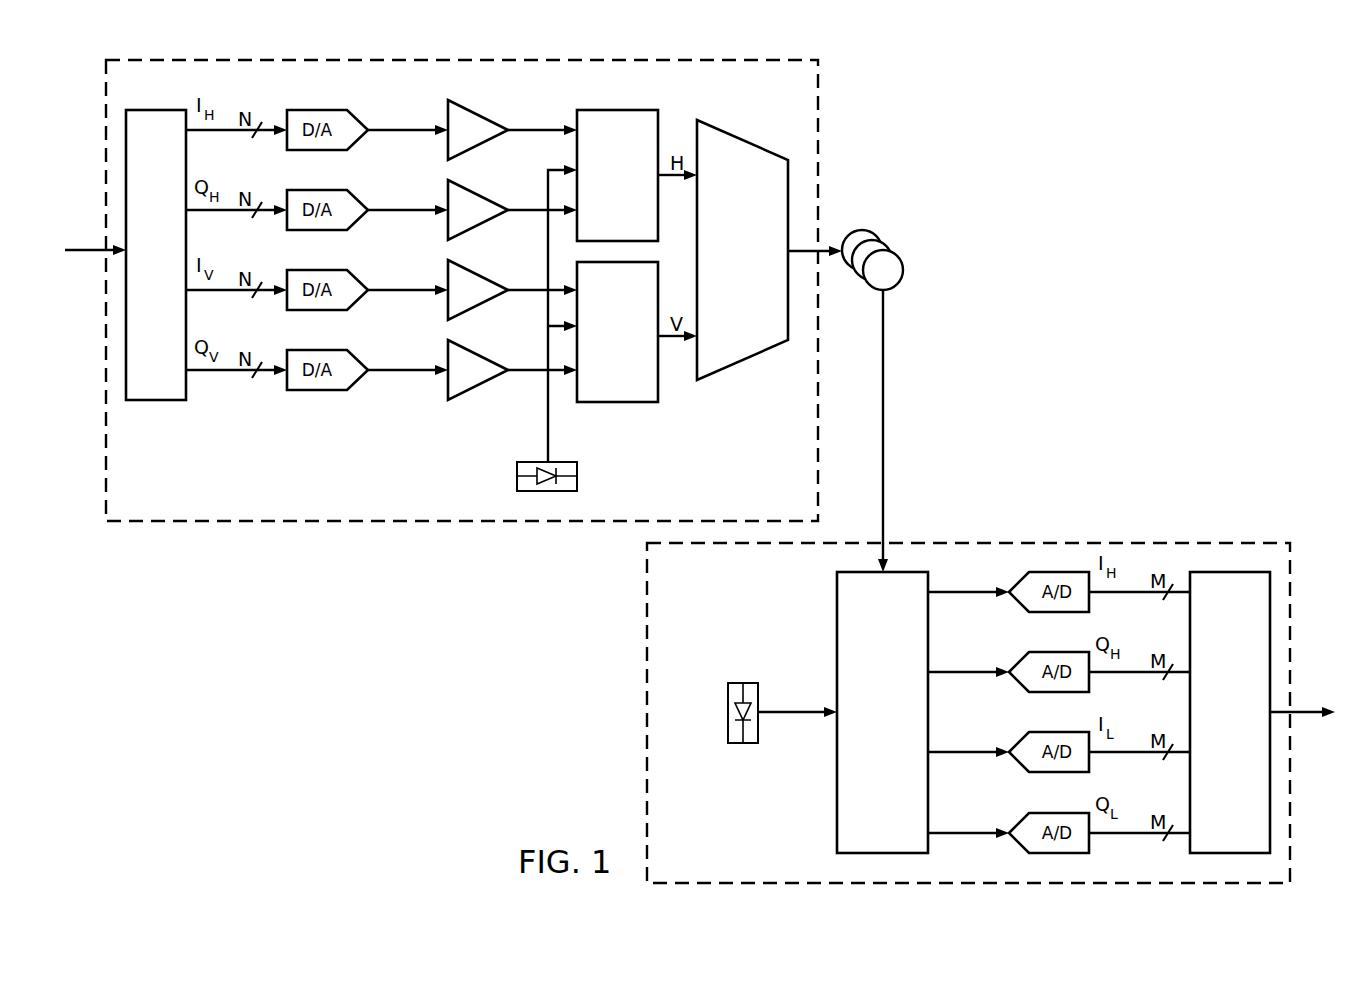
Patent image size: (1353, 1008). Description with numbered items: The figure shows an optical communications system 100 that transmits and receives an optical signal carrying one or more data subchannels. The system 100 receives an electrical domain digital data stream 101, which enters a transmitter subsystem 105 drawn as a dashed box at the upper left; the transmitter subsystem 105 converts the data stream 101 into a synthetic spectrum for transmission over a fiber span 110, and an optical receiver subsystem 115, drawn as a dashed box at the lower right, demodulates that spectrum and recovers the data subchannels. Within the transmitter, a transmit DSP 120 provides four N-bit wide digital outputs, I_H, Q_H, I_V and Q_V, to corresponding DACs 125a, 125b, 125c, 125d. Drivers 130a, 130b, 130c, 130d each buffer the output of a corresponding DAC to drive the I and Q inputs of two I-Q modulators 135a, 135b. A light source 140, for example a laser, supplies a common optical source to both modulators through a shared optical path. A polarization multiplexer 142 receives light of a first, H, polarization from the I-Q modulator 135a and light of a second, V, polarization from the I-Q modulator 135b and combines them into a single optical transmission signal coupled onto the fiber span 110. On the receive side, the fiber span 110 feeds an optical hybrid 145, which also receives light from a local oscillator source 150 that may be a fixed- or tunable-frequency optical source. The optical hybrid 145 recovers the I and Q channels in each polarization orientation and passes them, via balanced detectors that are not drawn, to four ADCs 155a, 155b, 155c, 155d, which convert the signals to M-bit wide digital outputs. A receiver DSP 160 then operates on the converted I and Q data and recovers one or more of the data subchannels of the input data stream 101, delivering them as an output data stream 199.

The system 100 is at (1174, 226).
The digital data stream 101 is at (86, 249).
The transmitter subsystem 105 is at (304, 526).
The fiber span 110 is at (903, 268).
The optical receiver subsystem 115 is at (640, 762).
The transmit DSP 120 is at (174, 295).
The DAC 125a is at (333, 110).
The DAC 125b is at (333, 190).
The DAC 125c is at (333, 270).
The DAC 125d is at (333, 350).
The driver 130a is at (479, 114).
The driver 130b is at (479, 194).
The driver 130c is at (479, 274).
The driver 130d is at (479, 354).
The I-Q modulator 135a is at (641, 208).
The I-Q modulator 135b is at (641, 361).
The light source 140 is at (578, 487).
The polarization multiplexer 142 is at (760, 282).
The optical hybrid 145 is at (902, 769).
The local oscillator source 150 is at (727, 731).
The ADC 155a is at (1041, 613).
The ADC 155b is at (1041, 693).
The ADC 155c is at (1041, 773).
The ADC 155d is at (1041, 854).
The receiver DSP 160 is at (1248, 745).
The output data stream 199 is at (1310, 718).